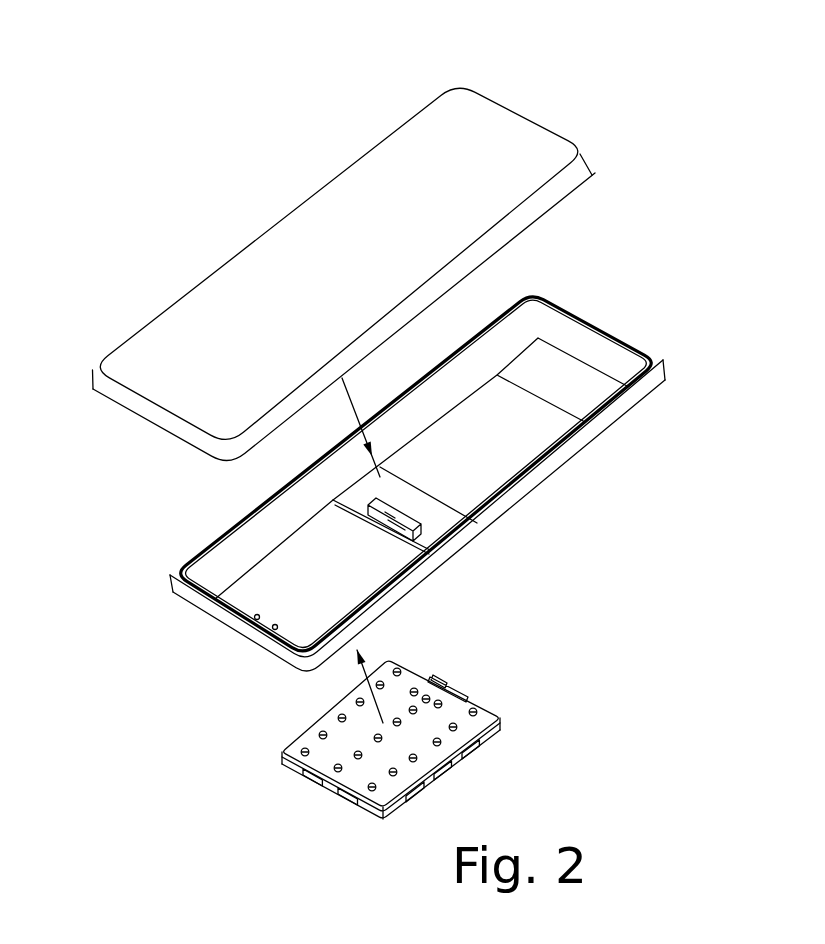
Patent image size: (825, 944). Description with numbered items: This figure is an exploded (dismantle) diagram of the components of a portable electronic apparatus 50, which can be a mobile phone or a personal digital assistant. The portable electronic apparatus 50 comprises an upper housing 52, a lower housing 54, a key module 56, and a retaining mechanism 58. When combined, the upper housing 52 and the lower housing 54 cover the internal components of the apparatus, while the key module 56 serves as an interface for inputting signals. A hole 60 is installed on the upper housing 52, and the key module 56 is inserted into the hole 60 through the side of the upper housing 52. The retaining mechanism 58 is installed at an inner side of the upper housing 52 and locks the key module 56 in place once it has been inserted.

The portable electronic apparatus 50 is at (690, 82).
The upper housing 52 is at (630, 410).
The lower housing 54 is at (278, 243).
The key module 56 is at (500, 717).
The retaining mechanism 58 is at (440, 537).
The hole 60 is at (277, 583).